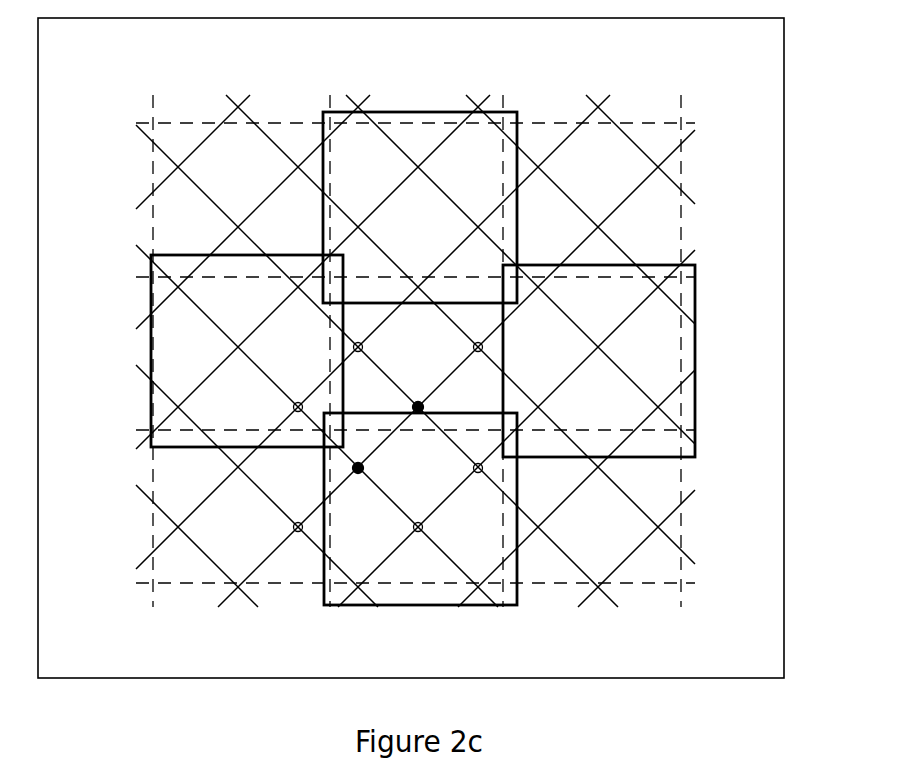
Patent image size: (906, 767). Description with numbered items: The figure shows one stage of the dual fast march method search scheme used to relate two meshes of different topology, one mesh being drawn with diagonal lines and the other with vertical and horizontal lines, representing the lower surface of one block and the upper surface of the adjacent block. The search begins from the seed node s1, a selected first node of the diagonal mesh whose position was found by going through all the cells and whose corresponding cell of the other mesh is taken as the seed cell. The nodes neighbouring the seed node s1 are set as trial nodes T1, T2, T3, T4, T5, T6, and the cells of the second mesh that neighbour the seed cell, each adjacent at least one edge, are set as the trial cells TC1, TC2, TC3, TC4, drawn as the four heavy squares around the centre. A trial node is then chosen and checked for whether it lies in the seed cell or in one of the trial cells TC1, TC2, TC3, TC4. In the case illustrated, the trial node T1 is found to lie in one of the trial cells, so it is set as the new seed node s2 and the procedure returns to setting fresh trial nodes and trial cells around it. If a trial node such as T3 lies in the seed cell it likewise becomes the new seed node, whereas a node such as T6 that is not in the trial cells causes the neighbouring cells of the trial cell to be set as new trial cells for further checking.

The trial cell TC1 is at (420, 527).
The trial cell TC2 is at (631, 361).
The trial cell TC3 is at (420, 186).
The trial cell TC4 is at (213, 351).
The trial node T1 is at (411, 533).
The trial node T2 is at (483, 482).
The trial node T3 is at (482, 334).
The trial node T4 is at (360, 334).
The trial node T5 is at (290, 403).
The trial node T6 is at (303, 512).
The seed node s1 is at (425, 396).
The seed node s2 is at (359, 458).